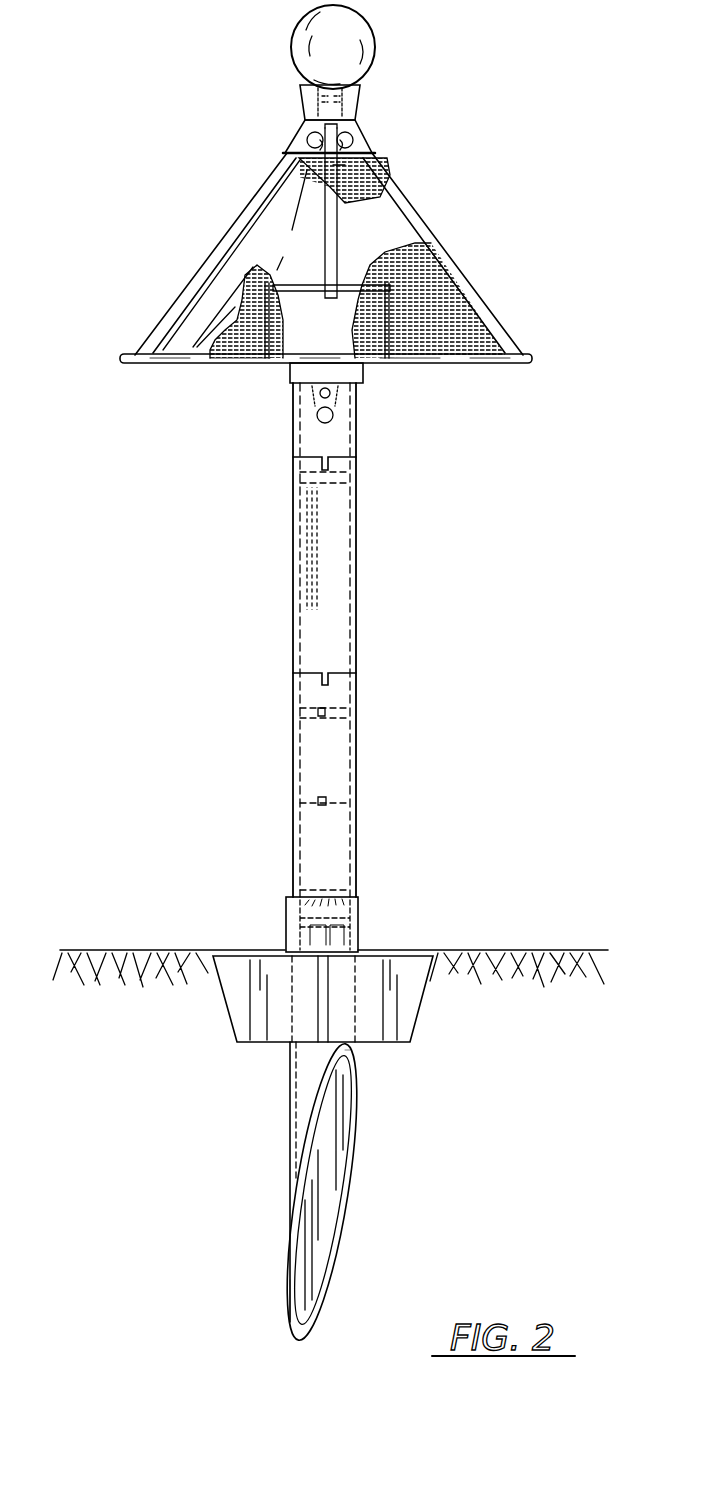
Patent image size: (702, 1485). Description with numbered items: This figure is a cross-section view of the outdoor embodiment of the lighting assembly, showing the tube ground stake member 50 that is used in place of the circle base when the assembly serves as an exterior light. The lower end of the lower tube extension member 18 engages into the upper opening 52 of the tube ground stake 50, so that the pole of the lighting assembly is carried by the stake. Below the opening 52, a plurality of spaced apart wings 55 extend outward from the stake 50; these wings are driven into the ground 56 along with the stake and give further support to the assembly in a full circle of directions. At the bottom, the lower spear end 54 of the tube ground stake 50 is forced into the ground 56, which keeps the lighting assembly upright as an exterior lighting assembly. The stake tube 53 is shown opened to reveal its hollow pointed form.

The lower tube extension member 18 is at (293, 848).
The tube ground stake member 50 is at (391, 940).
The upper opening 52 is at (357, 888).
The stake tube 53 is at (373, 1142).
The lower spear end 54 is at (290, 1287).
The spaced apart wings 55 is at (238, 992).
The ground 56 is at (98, 950).